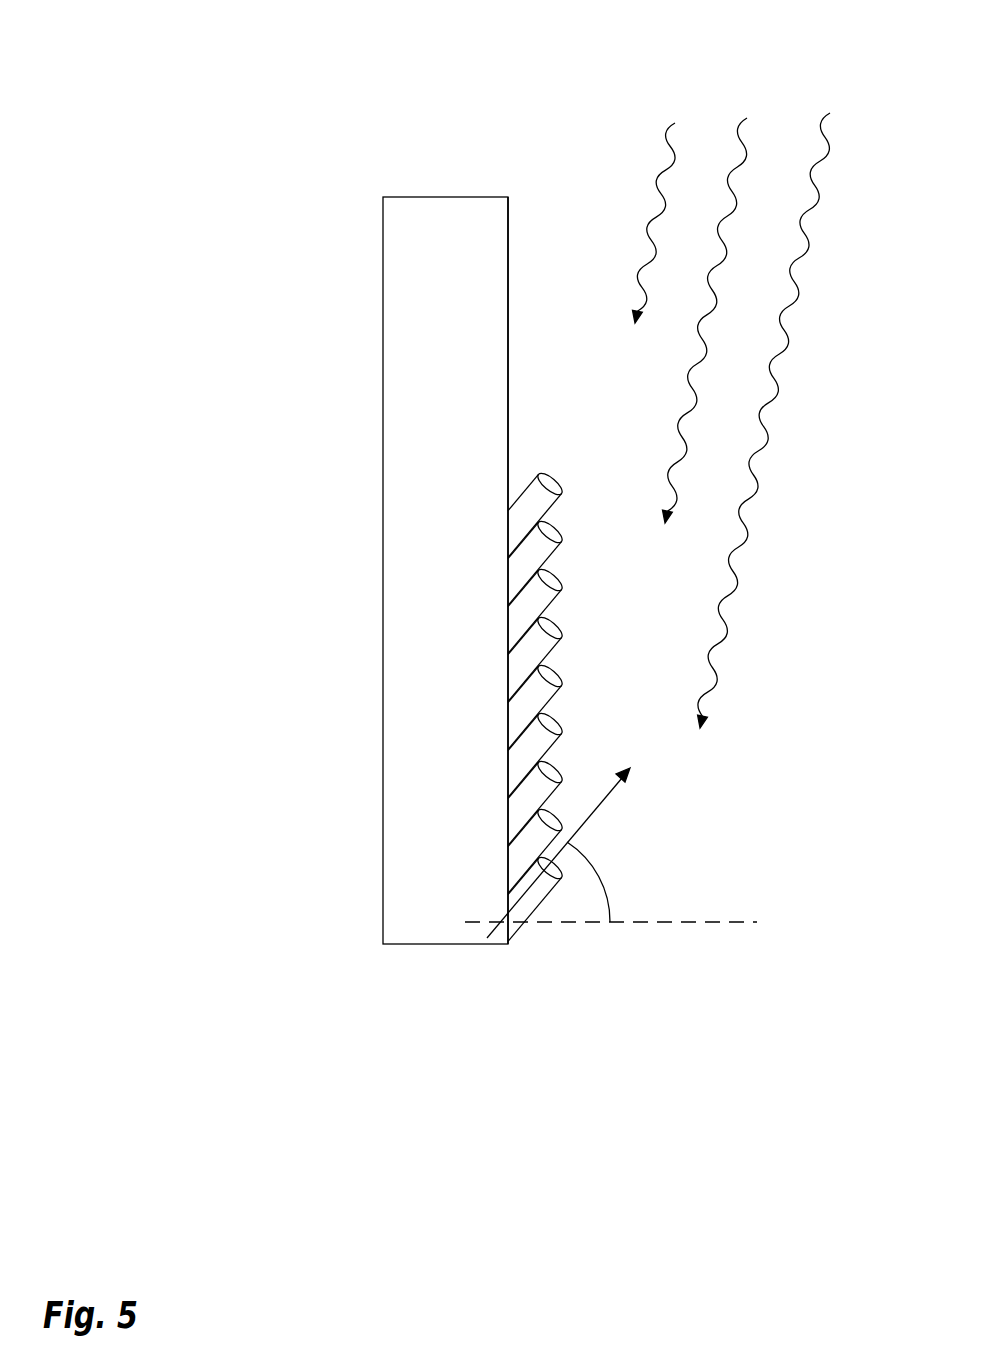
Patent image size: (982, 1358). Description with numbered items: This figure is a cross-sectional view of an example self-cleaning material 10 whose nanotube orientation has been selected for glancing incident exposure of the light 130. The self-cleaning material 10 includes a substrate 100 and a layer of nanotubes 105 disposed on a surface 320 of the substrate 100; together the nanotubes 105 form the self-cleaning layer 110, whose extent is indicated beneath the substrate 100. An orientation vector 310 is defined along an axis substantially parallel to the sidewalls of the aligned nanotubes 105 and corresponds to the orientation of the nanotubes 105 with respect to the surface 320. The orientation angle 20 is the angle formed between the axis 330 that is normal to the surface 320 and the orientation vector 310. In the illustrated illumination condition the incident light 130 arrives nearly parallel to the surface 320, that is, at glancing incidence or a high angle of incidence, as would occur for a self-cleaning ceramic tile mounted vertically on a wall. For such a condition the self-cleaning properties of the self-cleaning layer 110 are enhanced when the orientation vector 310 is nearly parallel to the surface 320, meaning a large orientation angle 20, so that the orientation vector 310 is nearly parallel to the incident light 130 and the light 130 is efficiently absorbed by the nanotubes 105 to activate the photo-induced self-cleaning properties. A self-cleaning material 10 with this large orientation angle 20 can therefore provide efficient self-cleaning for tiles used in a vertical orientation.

The self-cleaning material 10 is at (178, 135).
The substrate 100 is at (468, 583).
The surface 320 is at (509, 228).
The nanotubes 105 is at (560, 582).
The self-cleaning layer 110 is at (562, 947).
The light 130 is at (837, 93).
The orientation vector 310 is at (606, 802).
The axis 330 is at (700, 924).
The orientation angle 20 is at (604, 888).